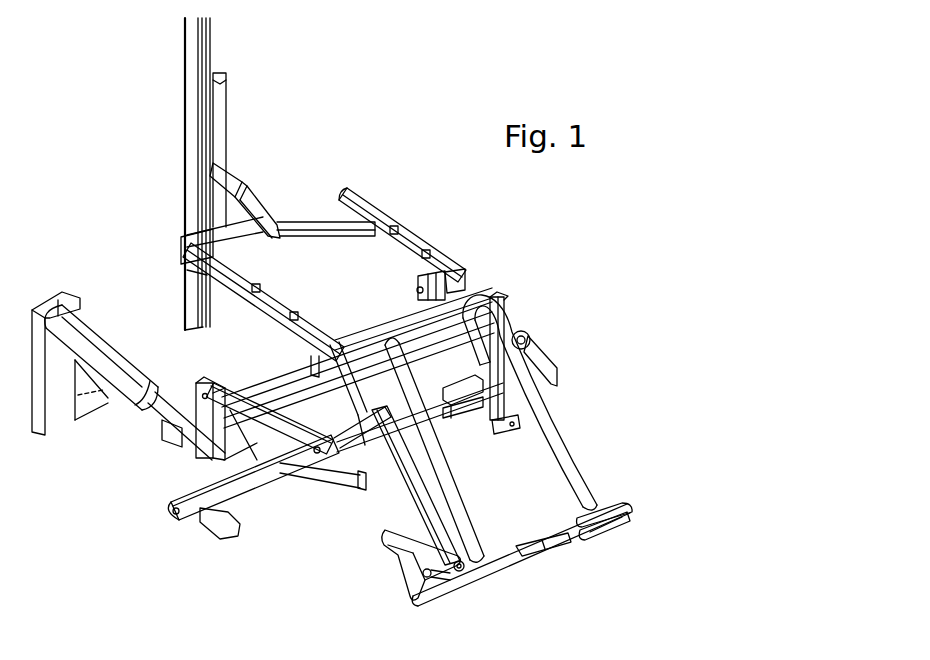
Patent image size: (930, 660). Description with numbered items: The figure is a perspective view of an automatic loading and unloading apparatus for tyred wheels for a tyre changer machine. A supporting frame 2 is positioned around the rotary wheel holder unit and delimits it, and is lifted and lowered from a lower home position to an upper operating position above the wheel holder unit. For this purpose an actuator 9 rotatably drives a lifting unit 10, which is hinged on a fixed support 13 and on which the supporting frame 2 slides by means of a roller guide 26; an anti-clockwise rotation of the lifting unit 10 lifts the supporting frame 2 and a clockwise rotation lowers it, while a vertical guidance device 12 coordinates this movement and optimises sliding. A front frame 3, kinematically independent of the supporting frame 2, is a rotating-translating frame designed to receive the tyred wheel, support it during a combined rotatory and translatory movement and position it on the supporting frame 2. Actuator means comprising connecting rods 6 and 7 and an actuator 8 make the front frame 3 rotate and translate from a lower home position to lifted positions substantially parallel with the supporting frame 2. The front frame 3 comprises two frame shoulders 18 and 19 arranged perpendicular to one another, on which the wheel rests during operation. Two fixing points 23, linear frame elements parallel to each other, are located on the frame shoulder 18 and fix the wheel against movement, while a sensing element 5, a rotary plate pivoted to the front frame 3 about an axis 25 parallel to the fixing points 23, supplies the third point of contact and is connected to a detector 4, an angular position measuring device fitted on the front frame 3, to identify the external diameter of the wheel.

The supporting frame 2 is at (403, 224).
The front frame 3 is at (562, 438).
The detector 4 is at (410, 566).
The sensing element 5 is at (462, 570).
The connecting rod 6 is at (262, 490).
The connecting rod 7 is at (329, 482).
The actuator means 8 is at (88, 318).
The actuator 9 is at (150, 428).
The lifting unit 10 is at (300, 403).
The vertical guidance device 12 is at (212, 34).
The fixed support 13 is at (195, 392).
The frame shoulder 18 is at (598, 538).
The frame shoulder 19 is at (475, 518).
The fixing points 23 is at (520, 553).
The axis 25 is at (442, 578).
The roller guide 26 is at (532, 328).